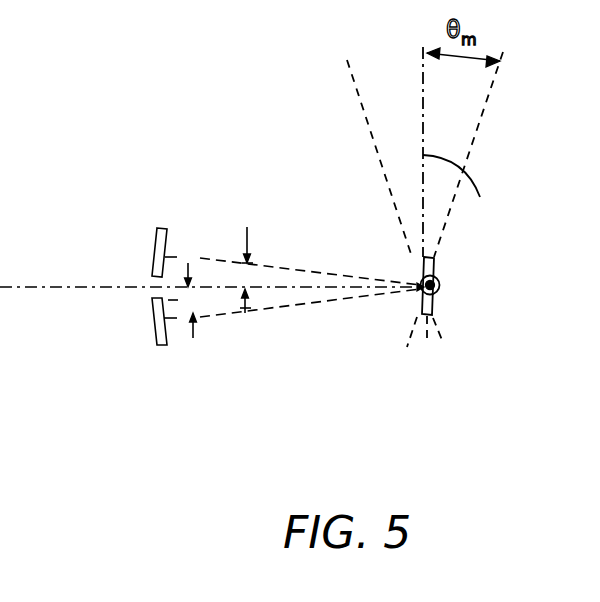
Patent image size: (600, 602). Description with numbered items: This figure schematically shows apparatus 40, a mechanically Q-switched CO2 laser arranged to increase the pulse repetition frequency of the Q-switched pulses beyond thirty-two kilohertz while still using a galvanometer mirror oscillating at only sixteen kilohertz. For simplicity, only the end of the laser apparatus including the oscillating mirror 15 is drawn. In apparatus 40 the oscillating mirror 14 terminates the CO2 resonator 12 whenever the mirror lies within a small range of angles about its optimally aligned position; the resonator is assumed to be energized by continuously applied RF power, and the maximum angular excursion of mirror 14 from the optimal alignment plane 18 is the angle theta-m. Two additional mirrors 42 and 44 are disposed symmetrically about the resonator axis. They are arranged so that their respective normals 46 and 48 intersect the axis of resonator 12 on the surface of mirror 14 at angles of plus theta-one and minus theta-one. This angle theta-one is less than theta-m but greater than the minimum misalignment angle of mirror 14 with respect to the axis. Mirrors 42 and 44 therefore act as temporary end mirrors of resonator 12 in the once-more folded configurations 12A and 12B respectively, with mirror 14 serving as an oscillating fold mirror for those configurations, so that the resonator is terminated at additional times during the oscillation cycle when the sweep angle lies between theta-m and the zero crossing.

The CO2 resonator 12 is at (120, 278).
The once-more folded resonator configuration 12A is at (325, 265).
The once-more folded resonator configuration 12B is at (332, 332).
The oscillating mirror 14 is at (430, 315).
The oscillating mirror 15 is at (418, 283).
The optimal alignment plane 18 is at (459, 183).
The apparatus 40 is at (223, 440).
The mirror 42 is at (157, 238).
The mirror 44 is at (153, 310).
The normal 46 is at (200, 253).
The normal 48 is at (210, 318).